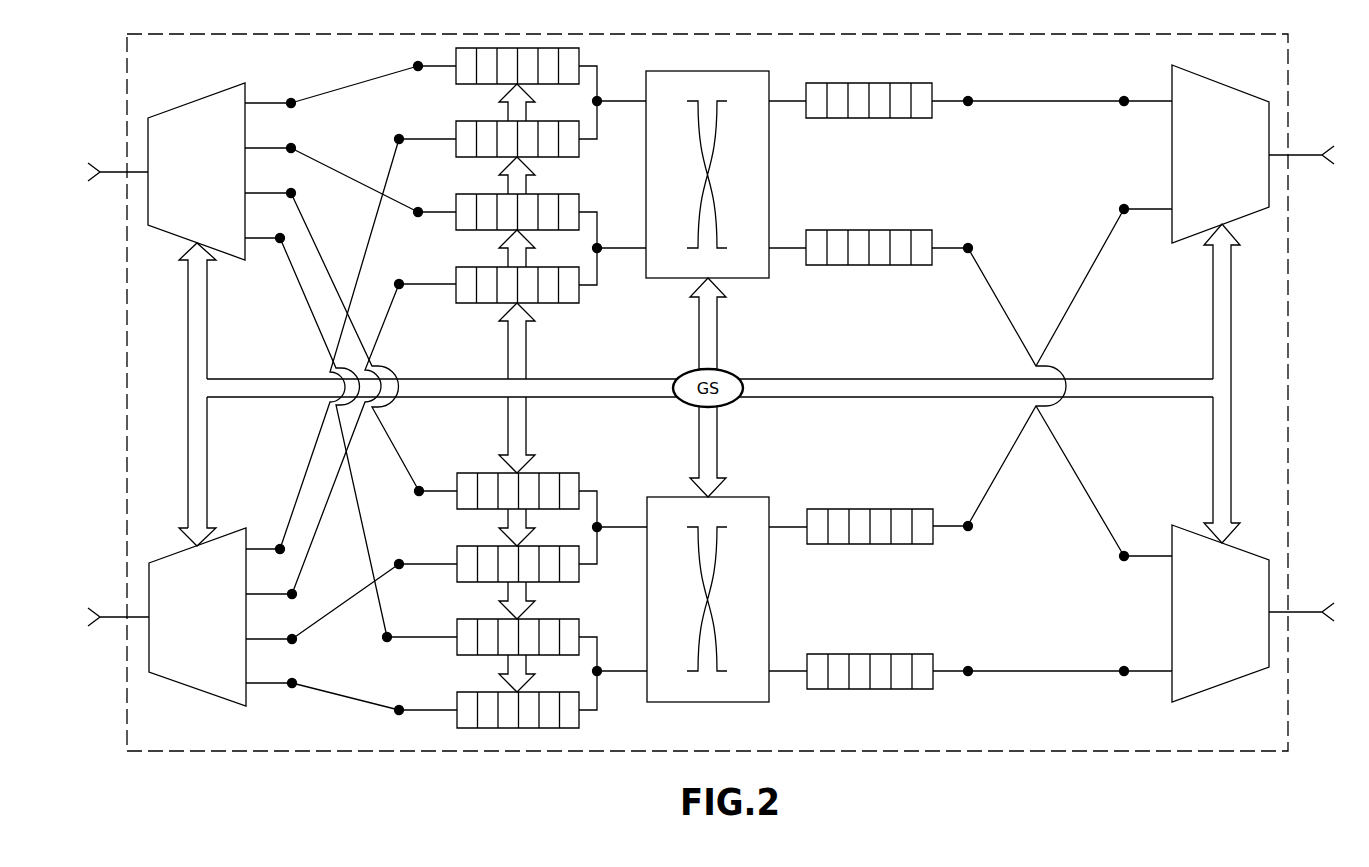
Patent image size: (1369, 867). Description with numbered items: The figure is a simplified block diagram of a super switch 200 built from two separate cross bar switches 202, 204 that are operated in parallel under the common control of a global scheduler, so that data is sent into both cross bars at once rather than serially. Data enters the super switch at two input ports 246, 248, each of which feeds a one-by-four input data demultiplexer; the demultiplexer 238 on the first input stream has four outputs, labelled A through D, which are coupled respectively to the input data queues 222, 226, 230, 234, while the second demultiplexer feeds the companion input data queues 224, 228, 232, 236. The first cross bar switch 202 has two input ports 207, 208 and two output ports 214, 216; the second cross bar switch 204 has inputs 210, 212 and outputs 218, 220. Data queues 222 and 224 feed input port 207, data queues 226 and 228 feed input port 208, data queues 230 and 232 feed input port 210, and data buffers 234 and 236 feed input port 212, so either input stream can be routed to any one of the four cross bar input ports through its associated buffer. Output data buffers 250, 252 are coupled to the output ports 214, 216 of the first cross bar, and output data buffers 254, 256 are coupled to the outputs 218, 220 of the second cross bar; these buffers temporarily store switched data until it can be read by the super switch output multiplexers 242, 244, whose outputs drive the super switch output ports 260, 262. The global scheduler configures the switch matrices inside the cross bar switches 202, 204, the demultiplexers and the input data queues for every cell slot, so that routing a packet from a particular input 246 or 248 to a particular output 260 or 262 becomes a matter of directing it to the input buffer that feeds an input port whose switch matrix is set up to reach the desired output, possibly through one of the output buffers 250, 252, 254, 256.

The super switch 200 is at (197, 810).
The first cross bar switch 202 is at (661, 279).
The second cross bar switch 204 is at (710, 703).
The input port 207 is at (640, 100).
The input port 208 is at (640, 246).
The input port 210 is at (640, 526).
The input port 212 is at (640, 670).
The output port 214 is at (777, 99).
The output port 216 is at (777, 246).
The output port 218 is at (779, 525).
The output port 220 is at (779, 669).
The input data queue 222 is at (453, 80).
The input data queue 224 is at (453, 153).
The input data queue 226 is at (453, 226).
The input data queue 228 is at (453, 299).
The input data queue 230 is at (453, 503).
The input data queue 232 is at (453, 577).
The input data buffer 234 is at (453, 650).
The input data queue 236 is at (453, 723).
The input data demultiplexer 238 is at (197, 98).
The output multiplexer 242 is at (1172, 157).
The output multiplexer 244 is at (1172, 614).
The input port 246 is at (118, 168).
The input port 248 is at (118, 613).
The output data buffer 250 is at (865, 83).
The output data buffer 252 is at (865, 230).
The output data buffer 254 is at (865, 509).
The output data buffer 256 is at (865, 654).
The output port 260 is at (1312, 154).
The output port 262 is at (1312, 611).